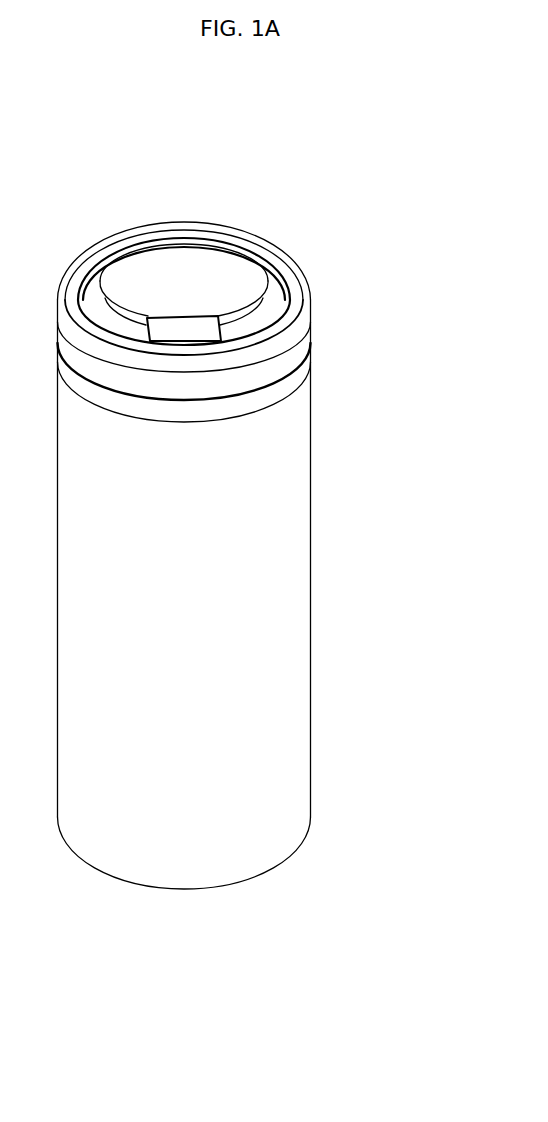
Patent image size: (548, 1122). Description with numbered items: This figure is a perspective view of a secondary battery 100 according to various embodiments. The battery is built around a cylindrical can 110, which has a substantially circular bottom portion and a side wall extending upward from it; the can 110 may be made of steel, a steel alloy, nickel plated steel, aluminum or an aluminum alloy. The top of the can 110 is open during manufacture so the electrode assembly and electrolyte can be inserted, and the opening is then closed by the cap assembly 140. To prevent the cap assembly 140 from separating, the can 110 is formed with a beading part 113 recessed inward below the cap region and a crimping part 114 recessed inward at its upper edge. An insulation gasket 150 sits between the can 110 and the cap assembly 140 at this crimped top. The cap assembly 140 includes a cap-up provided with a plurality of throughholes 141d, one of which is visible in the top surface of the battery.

The secondary battery 100 is at (368, 177).
The cylindrical can 110 is at (311, 579).
The beading part 113 is at (311, 345).
The crimping part 114 is at (296, 281).
The insulation gasket 150 is at (250, 248).
The cap assembly 140 is at (187, 274).
The throughholes 141d is at (173, 329).